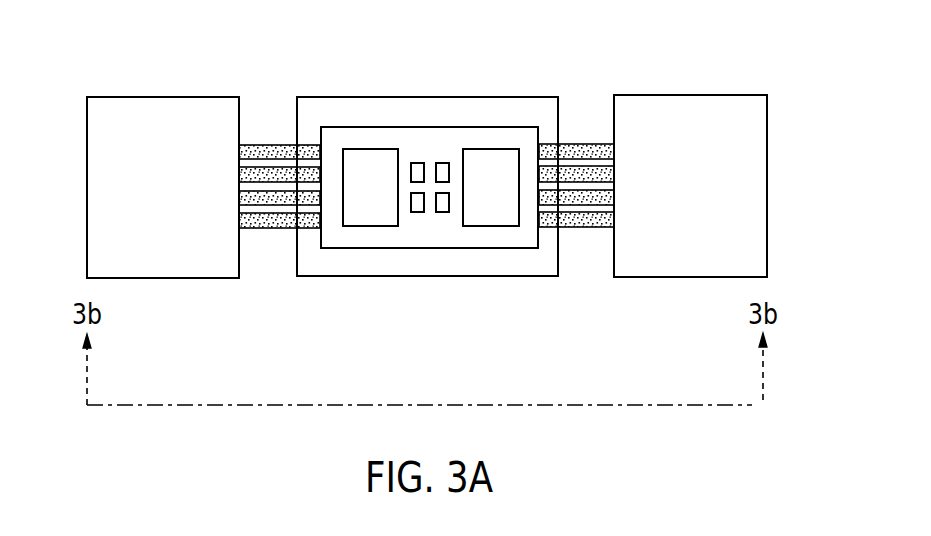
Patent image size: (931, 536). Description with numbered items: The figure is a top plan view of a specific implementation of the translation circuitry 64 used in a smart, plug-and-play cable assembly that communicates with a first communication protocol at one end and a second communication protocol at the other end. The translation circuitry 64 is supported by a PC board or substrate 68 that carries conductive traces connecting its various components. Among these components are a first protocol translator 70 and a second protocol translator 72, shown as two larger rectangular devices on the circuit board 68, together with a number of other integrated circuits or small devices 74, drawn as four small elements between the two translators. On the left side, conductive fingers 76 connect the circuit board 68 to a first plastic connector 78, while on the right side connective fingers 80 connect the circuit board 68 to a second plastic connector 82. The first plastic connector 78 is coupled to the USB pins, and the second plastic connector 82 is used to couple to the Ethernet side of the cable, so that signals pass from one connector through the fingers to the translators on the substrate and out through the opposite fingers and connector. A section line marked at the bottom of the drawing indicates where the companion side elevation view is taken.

The translation circuitry 64 is at (533, 110).
The PC board or substrate 68 is at (485, 240).
The first protocol translator 70 is at (364, 160).
The second protocol translator 72 is at (490, 160).
The integrated circuits or small devices 74 is at (418, 160).
The conductive fingers 76 is at (287, 172).
The first plastic connector 78 is at (177, 112).
The connective fingers 80 is at (575, 172).
The second plastic connector 82 is at (684, 110).